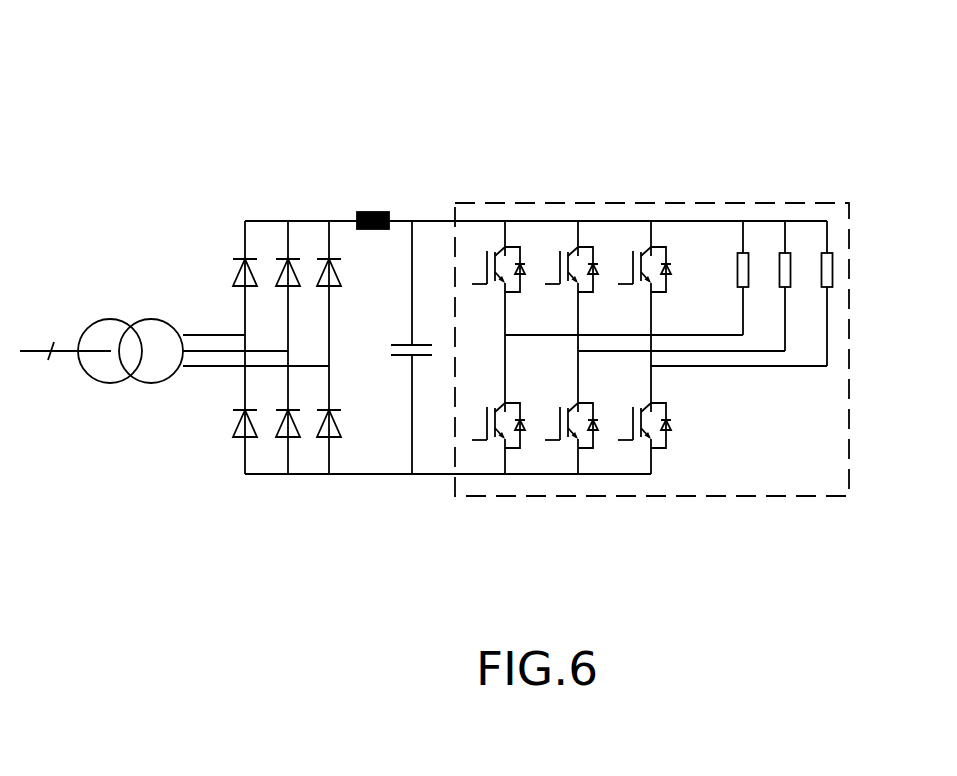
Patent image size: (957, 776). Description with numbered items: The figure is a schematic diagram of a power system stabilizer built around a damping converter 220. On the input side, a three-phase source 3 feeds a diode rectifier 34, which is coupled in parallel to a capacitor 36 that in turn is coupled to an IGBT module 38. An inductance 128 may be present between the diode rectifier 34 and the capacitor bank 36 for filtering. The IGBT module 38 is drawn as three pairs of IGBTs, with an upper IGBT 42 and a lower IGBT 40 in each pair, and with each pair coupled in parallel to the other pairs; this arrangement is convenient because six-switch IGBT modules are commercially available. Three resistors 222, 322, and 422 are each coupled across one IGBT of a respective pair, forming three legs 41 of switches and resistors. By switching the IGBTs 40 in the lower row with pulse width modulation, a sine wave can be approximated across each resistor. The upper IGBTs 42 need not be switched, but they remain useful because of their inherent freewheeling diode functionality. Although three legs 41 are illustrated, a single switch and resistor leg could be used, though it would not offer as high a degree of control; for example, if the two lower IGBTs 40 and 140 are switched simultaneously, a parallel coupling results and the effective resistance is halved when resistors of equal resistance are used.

The three-phase AC power supply 3 is at (174, 357).
The diode rectifier 34 is at (305, 208).
The inductance 128 is at (375, 210).
The capacitor 36 is at (408, 357).
The IGBT module 38 is at (561, 203).
The damping converter 220 is at (495, 107).
The upper IGBT 42 is at (487, 263).
The lower IGBT 40 is at (495, 448).
The IGBT 140 is at (592, 450).
The leg 41 is at (811, 309).
The resistor 222 is at (740, 270).
The resistor 322 is at (780, 270).
The resistor 422 is at (825, 270).